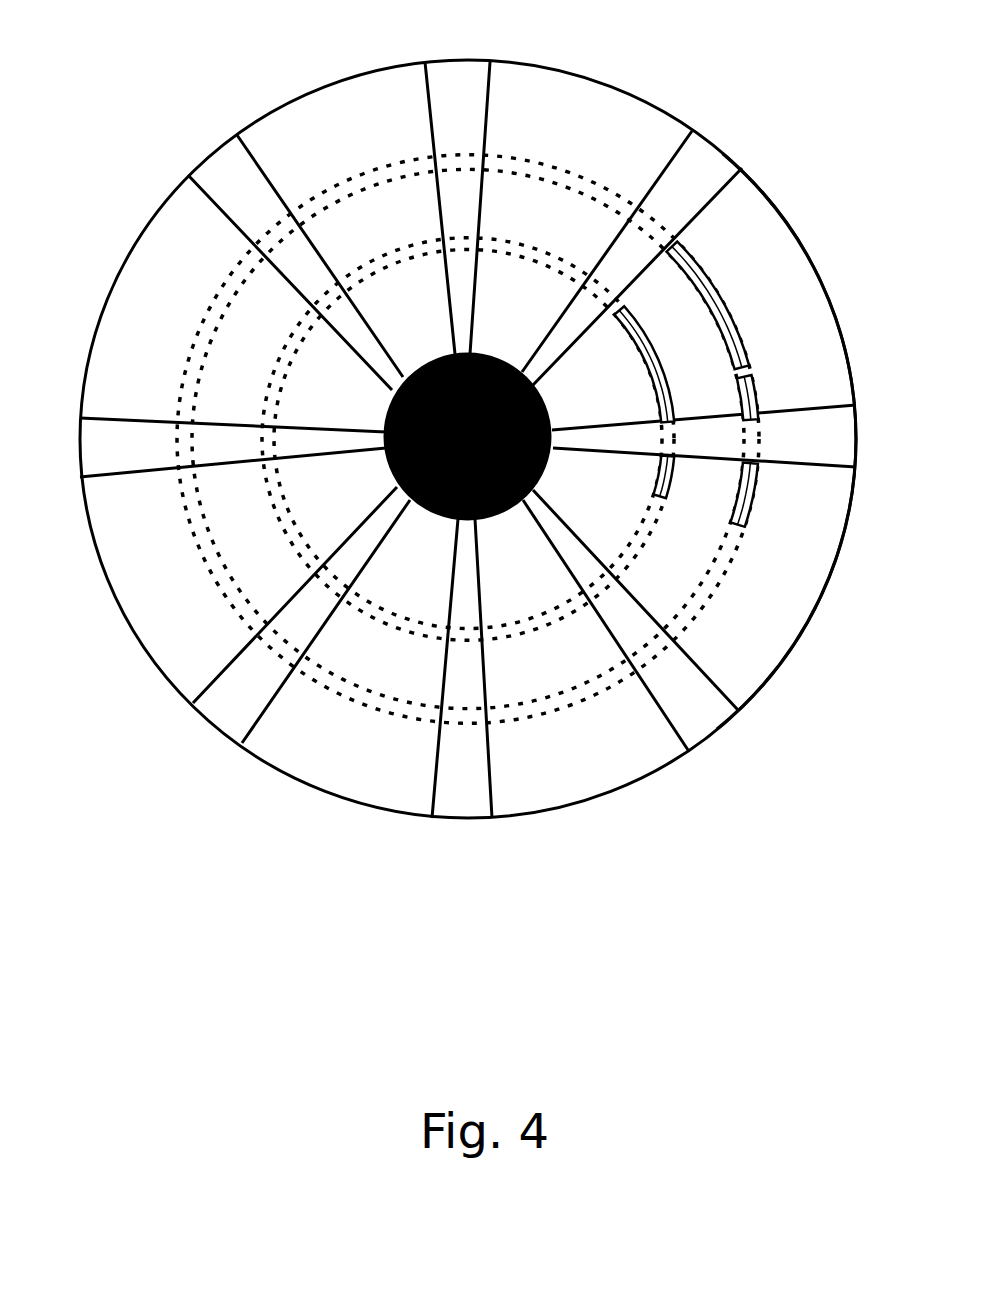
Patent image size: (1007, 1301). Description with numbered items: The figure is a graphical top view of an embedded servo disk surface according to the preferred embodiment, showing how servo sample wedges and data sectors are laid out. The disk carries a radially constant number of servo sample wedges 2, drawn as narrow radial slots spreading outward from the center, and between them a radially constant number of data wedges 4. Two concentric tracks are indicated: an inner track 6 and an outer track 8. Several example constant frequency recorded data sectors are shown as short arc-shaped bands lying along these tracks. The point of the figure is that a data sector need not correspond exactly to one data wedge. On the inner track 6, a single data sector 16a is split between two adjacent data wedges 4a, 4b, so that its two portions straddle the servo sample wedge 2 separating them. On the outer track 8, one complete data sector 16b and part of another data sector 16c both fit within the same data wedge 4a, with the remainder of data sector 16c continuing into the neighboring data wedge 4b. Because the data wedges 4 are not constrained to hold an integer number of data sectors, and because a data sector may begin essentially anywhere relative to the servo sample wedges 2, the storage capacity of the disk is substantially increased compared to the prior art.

The servo sample wedge 2 is at (453, 80).
The data wedge 4 is at (317, 117).
The data wedge 4a is at (808, 301).
The data wedge 4b is at (780, 597).
The inner track 6 is at (382, 608).
The outer track 8 is at (335, 672).
The data sector 16a is at (661, 354).
The data sector 16b is at (733, 309).
The data sector 16c is at (757, 386).